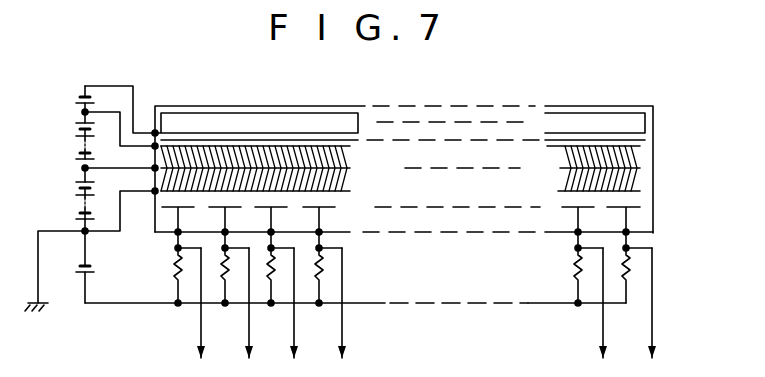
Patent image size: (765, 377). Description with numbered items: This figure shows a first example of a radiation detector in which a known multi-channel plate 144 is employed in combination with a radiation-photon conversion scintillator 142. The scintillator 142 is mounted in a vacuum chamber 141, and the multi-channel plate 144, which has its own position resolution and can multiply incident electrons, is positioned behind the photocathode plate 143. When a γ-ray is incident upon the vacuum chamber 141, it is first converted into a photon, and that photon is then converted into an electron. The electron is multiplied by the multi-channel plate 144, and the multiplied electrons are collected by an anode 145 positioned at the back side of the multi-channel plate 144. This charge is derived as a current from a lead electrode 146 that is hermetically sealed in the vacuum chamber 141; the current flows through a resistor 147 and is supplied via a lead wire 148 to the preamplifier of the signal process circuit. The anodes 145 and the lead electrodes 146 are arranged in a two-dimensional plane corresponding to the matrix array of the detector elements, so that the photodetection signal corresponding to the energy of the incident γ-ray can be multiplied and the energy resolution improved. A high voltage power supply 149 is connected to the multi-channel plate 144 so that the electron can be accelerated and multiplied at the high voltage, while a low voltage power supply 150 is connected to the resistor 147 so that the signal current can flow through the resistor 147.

The vacuum chamber 141 is at (630, 104).
The radiation-photon conversion scintillator 142 is at (645, 126).
The photocathode plate 143 is at (645, 140).
The multi-channel plate 144 is at (648, 165).
The anode 145 is at (640, 207).
The lead electrode 146 is at (630, 240).
The resistor 147 is at (636, 274).
The lead wire 148 is at (652, 328).
The high voltage power supply 149 is at (74, 168).
The low voltage power supply 150 is at (80, 298).